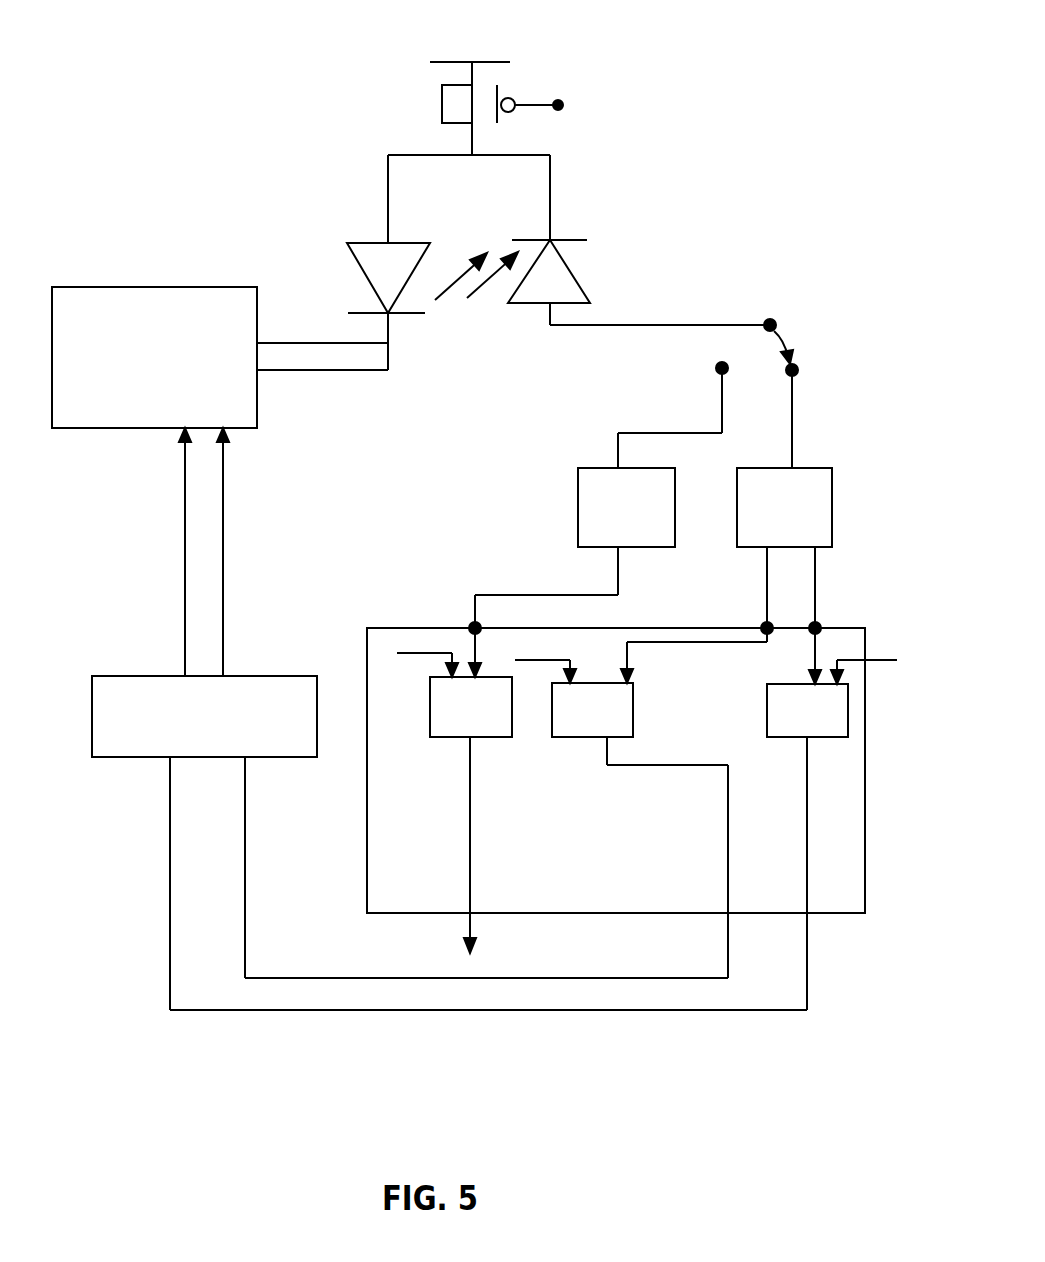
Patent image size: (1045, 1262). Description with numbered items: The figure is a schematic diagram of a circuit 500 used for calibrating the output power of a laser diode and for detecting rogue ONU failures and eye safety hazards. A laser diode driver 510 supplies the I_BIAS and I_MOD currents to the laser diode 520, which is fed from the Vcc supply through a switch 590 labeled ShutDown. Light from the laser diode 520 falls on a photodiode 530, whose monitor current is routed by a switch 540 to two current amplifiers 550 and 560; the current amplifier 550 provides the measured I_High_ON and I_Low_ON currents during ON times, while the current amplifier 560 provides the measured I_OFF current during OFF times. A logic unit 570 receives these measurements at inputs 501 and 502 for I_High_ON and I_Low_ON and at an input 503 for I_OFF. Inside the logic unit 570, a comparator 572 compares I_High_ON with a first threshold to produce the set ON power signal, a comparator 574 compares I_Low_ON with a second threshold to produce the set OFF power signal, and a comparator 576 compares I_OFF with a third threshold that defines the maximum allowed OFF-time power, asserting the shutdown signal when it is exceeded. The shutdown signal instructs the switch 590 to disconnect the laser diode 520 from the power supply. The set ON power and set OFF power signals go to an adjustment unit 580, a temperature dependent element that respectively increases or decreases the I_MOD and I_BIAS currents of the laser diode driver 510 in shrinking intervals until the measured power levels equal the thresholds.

The circuit 500 is at (761, 31).
The laser diode driver 510 is at (88, 287).
The laser diode 520 is at (372, 243).
The photodiode 530 is at (565, 240).
The switch 540 is at (780, 330).
The current amplifier 550 is at (820, 467).
The current amplifier 560 is at (590, 467).
The logic unit 570 is at (367, 840).
The comparator 572 is at (767, 697).
The comparator 574 is at (633, 698).
The comparator 576 is at (430, 718).
The adjustment unit 580 is at (250, 676).
The switch 590 is at (532, 107).
The input 501 is at (819, 624).
The input 502 is at (762, 624).
The input 503 is at (470, 622).